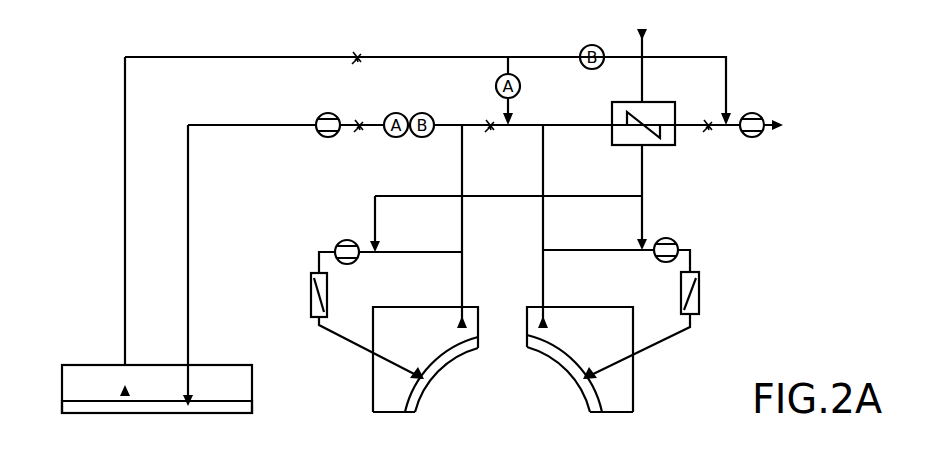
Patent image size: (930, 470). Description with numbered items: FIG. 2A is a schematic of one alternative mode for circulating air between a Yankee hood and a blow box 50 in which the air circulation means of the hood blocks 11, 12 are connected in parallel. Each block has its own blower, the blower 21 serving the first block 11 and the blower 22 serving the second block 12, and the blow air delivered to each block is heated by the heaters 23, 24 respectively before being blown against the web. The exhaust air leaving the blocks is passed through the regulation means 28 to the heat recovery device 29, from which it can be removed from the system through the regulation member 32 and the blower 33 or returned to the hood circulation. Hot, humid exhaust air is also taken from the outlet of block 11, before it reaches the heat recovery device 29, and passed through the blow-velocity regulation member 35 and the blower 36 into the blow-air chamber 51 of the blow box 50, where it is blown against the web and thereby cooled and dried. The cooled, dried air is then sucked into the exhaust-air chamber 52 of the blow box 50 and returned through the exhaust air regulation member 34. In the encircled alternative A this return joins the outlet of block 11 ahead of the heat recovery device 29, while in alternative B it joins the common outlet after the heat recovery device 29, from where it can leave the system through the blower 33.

The first hood block 11 is at (385, 382).
The second hood block 12 is at (625, 378).
The blower of the first block 21 is at (346, 240).
The blower of the second block 22 is at (678, 240).
The heater 23 is at (311, 292).
The heater 24 is at (700, 285).
The regulation means 28 is at (490, 134).
The heat recovery device 29 is at (666, 140).
The regulation member 32 is at (706, 118).
The blower 33 is at (760, 115).
The exhaust air regulation member 34 is at (355, 50).
The blow-velocity regulation member 35 is at (359, 134).
The blower 36 is at (324, 136).
The blow box 50 is at (62, 382).
The blow-air chamber 51 is at (252, 382).
The exhaust-air chamber 52 is at (232, 413).